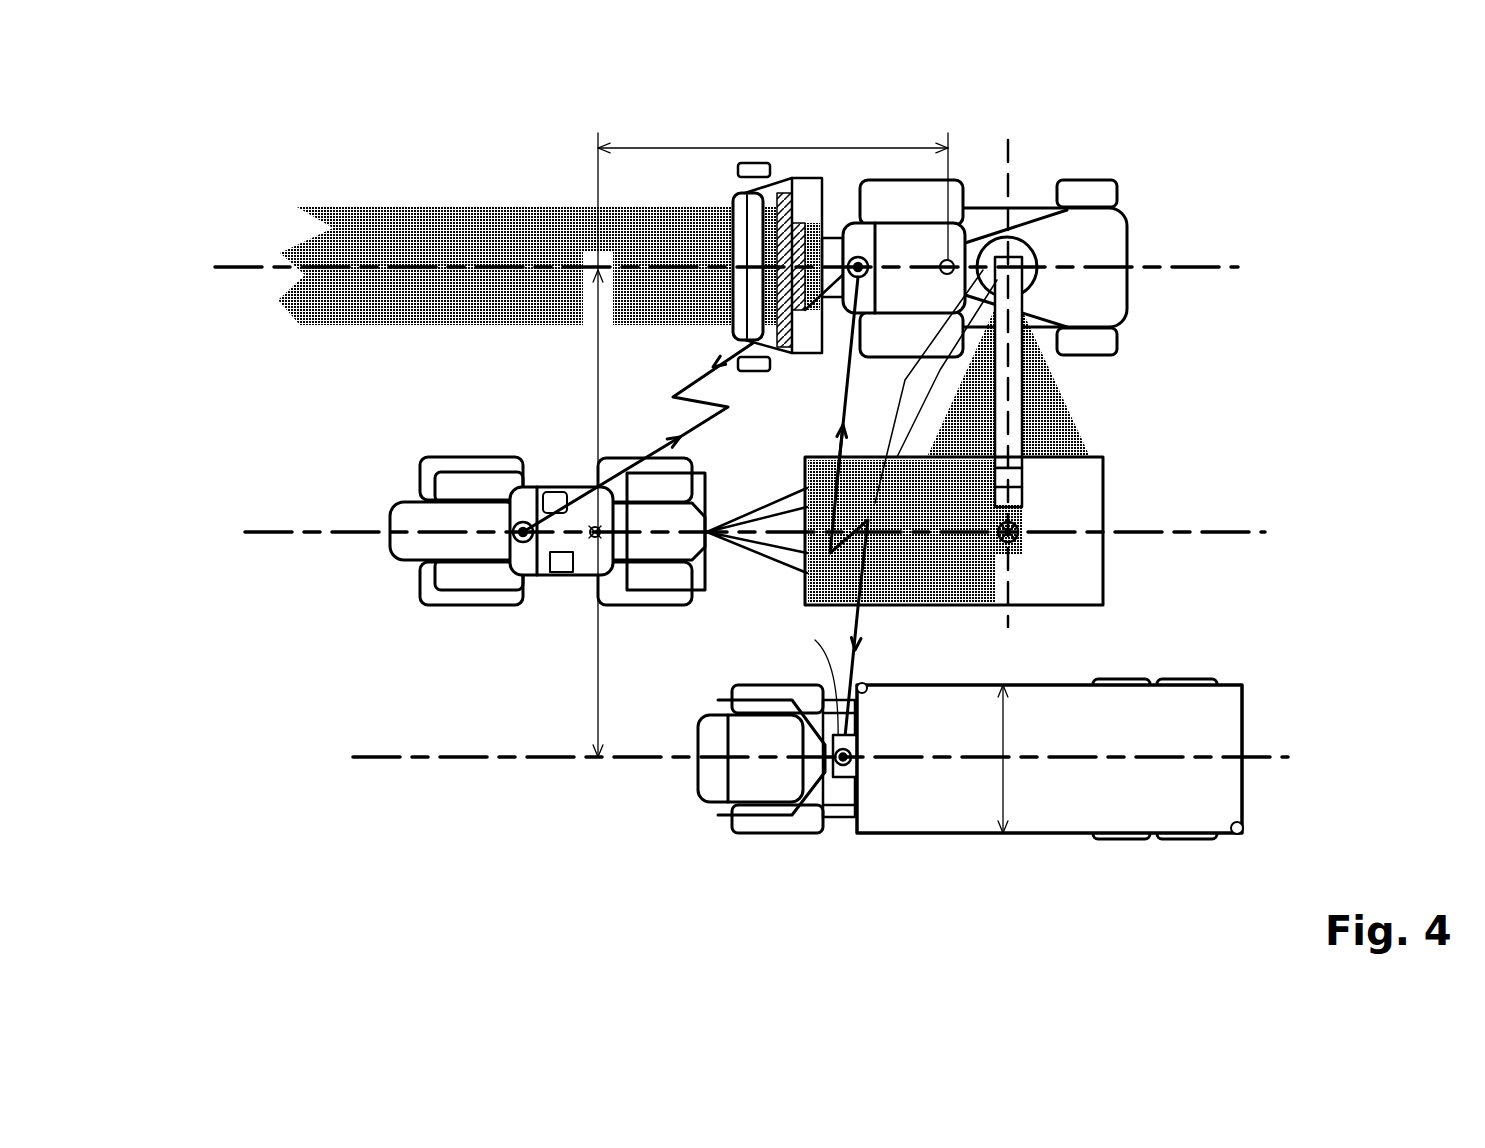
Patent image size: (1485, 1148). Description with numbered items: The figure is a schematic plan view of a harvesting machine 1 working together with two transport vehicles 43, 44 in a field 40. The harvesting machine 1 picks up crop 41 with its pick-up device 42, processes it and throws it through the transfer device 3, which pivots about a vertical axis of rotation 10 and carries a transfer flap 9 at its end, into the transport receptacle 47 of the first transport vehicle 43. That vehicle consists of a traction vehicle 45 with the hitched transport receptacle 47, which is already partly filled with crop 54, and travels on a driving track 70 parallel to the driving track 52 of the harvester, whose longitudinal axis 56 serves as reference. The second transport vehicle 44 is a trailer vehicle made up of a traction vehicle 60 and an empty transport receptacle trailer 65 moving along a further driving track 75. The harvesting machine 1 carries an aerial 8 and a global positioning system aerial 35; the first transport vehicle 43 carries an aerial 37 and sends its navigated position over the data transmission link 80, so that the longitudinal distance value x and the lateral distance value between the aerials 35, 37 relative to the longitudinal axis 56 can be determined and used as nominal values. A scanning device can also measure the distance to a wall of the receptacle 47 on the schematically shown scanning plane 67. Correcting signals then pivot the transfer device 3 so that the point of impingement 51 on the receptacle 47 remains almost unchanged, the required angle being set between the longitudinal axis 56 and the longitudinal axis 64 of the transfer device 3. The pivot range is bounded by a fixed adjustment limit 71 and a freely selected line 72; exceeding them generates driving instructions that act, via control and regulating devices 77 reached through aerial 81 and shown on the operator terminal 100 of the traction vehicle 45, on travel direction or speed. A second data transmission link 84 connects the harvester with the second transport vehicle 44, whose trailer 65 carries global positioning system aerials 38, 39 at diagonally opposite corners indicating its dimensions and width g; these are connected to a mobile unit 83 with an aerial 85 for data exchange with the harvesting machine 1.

The harvesting machine 1 is at (1040, 147).
The transfer device 3 is at (1023, 412).
The aerial 8 is at (848, 255).
The transfer flap 9 is at (1023, 502).
The vertical axis of rotation 10 is at (1018, 258).
The global positioning system aerial 35 is at (947, 260).
The aerial 37 is at (600, 537).
The global positioning system aerial 38 is at (868, 690).
The global positioning system aerial 39 is at (1242, 832).
The field 40 is at (280, 698).
The crop 41 is at (507, 227).
The pick-up device 42 is at (805, 190).
The first transport vehicle 43 is at (710, 628).
The second transport vehicle 44 is at (983, 773).
The traction vehicle 45 is at (571, 543).
The transport receptacle 47 is at (1052, 478).
The point of impingement 51 is at (1022, 533).
The driving track 52 is at (778, 241).
The crop 54 is at (940, 573).
The longitudinal axis 56 is at (1222, 265).
The traction vehicle 60 is at (748, 782).
The longitudinal axis of the transfer device 64 is at (1008, 178).
The transport receptacle trailer 65 is at (1197, 707).
The scanning plane 67 is at (1057, 390).
The driving track 70 is at (1237, 530).
The fixed adjustment limit 71 is at (913, 418).
The line 72 is at (850, 407).
The further driving track 75 is at (1277, 757).
The control and regulating device 77 is at (558, 563).
The data transmission link 80 is at (712, 365).
The aerial 81 is at (522, 527).
The mobile unit 83 is at (809, 684).
The data transmission link 84 is at (860, 607).
The aerial 85 is at (837, 780).
The operator terminal 100 is at (553, 502).